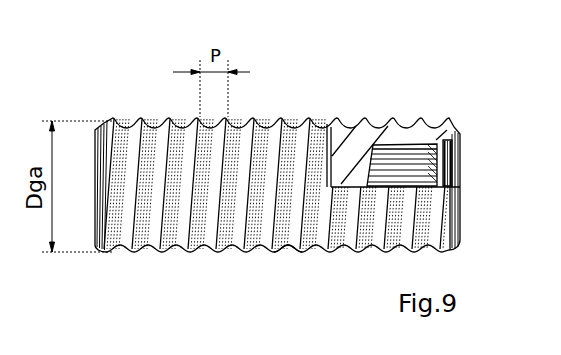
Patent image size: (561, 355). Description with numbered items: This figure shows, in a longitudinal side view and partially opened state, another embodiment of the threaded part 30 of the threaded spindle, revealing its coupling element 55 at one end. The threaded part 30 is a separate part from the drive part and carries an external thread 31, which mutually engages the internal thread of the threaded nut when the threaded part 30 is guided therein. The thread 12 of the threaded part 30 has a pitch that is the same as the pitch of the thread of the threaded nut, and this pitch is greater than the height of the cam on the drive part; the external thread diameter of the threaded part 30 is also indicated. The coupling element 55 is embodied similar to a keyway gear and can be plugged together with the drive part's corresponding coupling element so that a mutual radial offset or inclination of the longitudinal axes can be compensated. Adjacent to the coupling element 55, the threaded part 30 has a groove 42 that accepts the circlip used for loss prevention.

The thread 12 is at (338, 119).
The threaded part 30 is at (270, 112).
The thread 31 is at (293, 255).
The coupling element 55 is at (410, 143).
The groove 42 is at (461, 146).